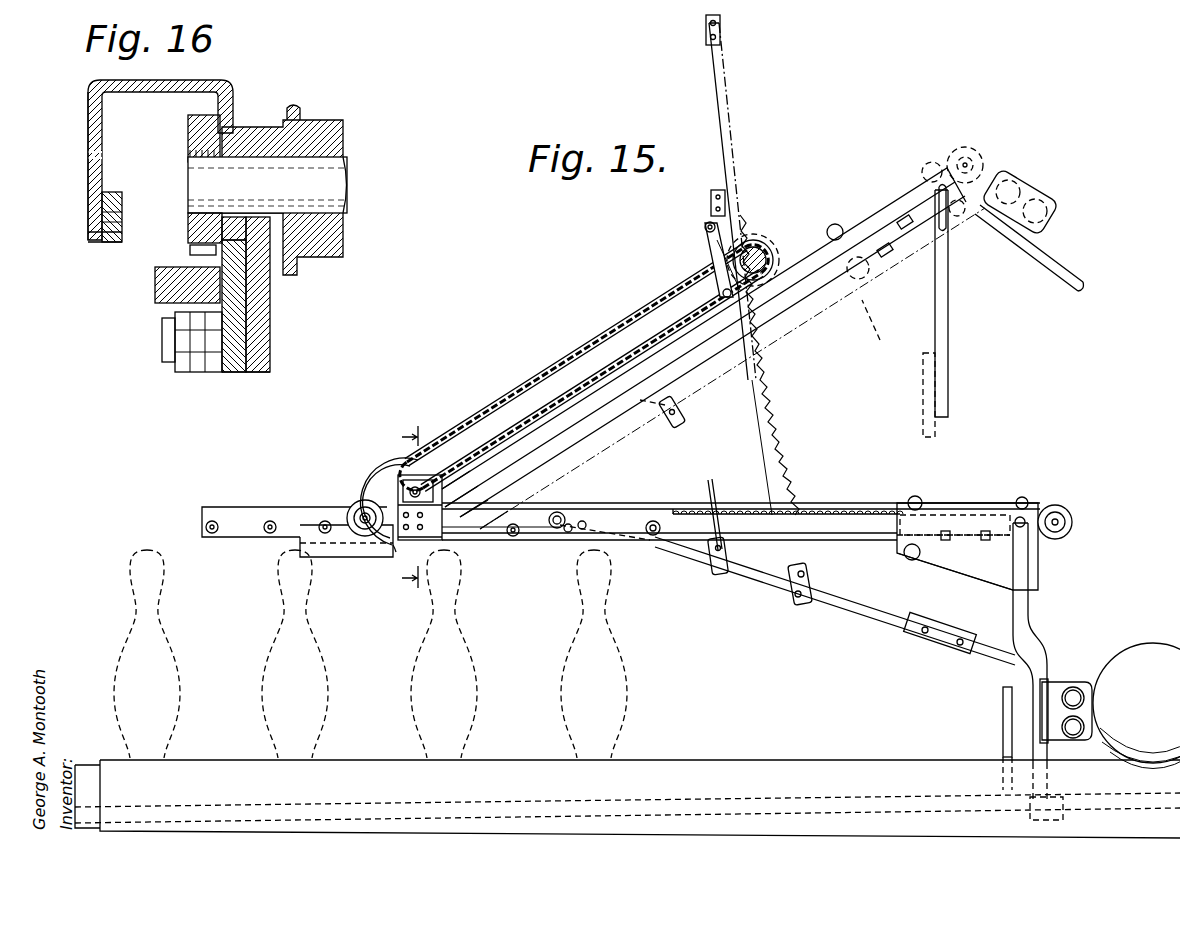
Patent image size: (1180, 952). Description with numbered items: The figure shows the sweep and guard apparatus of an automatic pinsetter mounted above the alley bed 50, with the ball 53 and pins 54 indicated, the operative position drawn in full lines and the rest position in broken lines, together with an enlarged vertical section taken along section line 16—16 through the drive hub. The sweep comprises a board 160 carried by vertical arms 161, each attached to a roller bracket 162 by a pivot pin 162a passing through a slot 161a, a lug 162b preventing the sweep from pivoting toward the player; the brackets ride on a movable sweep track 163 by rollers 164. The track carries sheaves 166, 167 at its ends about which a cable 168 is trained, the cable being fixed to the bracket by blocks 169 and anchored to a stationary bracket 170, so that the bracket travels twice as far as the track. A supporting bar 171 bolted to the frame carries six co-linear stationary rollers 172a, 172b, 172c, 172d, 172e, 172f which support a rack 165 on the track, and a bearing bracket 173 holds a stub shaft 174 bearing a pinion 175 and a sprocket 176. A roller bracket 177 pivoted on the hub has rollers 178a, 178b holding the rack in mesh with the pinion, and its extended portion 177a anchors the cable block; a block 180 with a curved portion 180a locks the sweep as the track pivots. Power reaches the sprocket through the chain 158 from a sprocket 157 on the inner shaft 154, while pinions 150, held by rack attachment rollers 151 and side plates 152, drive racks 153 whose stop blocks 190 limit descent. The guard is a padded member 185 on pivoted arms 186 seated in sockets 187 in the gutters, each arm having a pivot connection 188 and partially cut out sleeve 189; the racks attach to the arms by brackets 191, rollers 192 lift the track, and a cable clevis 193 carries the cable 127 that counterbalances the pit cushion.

In FIG. 15, the section line 16— 16 is at (406, 509).
In FIG. 15, the alley bed 50 is at (832, 760).
In FIG. 15, the ball 53 is at (1144, 645).
In FIG. 15, the pins 54 is at (230, 645).
In FIG. 15, the cable 127 is at (626, 366).
In FIG. 15, the pinion 150 is at (772, 242).
In FIG. 15, the rack attachment roller 151 is at (704, 226).
In FIG. 15, the side plate 152 is at (708, 245).
In FIG. 15, the rack 153 is at (722, 103).
In FIG. 15, the inner shaft 154 is at (752, 247).
In FIG. 15, the sprocket 157 is at (766, 234).
In FIG. 15, the chain 158 is at (538, 366).
In FIG. 15, the board 160 is at (1003, 705).
In FIG. 15, the vertical arm 161 is at (1030, 619).
In FIG. 15, the slot 161a is at (1010, 245).
In FIG. 15, the roller bracket 162 is at (862, 280).
In FIG. 15, the pivot pin 162a is at (925, 172).
In FIG. 15, the lug 162b is at (1036, 588).
In FIG. 15, the sweep track 163 is at (815, 318).
In FIG. 15, the roller 164 is at (930, 163).
In FIG. 16, the rack 165 is at (168, 281).
In FIG. 15, the rack 165 is at (706, 490).
In FIG. 15, the sheave 166 is at (360, 500).
In FIG. 15, the sheave 167 is at (1073, 518).
In FIG. 16, the cable 168 is at (122, 216).
In FIG. 15, the cable 168 is at (858, 510).
In FIG. 15, the block 169 is at (944, 531).
In FIG. 16, the stationary bracket 170 is at (108, 244).
In FIG. 16, the supporting bar 171 is at (256, 372).
In FIG. 15, the supporting bar 171 is at (280, 507).
In FIG. 15, the stationary roller 172a is at (206, 524).
In FIG. 15, the stationary roller 172b is at (265, 534).
In FIG. 15, the stationary roller 172c is at (325, 520).
In FIG. 15, the stationary roller 172d is at (520, 524).
In FIG. 15, the stationary roller 172e is at (575, 524).
In FIG. 15, the stationary roller 172f is at (651, 545).
In FIG. 16, the bearing bracket 173 is at (270, 316).
In FIG. 15, the bearing bracket 173 is at (449, 475).
In FIG. 16, the stub shaft 174 is at (349, 190).
In FIG. 15, the stub shaft 174 is at (445, 490).
In FIG. 16, the pinion 175 is at (190, 139).
In FIG. 15, the pinion 175 is at (500, 512).
In FIG. 16, the sprocket 176 is at (347, 135).
In FIG. 15, the sprocket 176 is at (458, 462).
In FIG. 16, the roller bracket 177 is at (228, 99).
In FIG. 15, the roller bracket 177 is at (400, 468).
In FIG. 16, the extended portion 177a is at (90, 118).
In FIG. 16, the roller 178a is at (180, 372).
In FIG. 15, the roller 178b is at (468, 541).
In FIG. 15, the block 180 is at (356, 557).
In FIG. 15, the curved portion 180a is at (405, 560).
In FIG. 15, the padded member 185 is at (1045, 200).
In FIG. 15, the pivoted arm 186 is at (787, 358).
In FIG. 15, the socket 187 is at (1063, 816).
In FIG. 15, the pivot connection 188 is at (952, 626).
In FIG. 15, the partially cut out sleeve 189 is at (915, 650).
In FIG. 15, the stop block 190 is at (706, 30).
In FIG. 15, the bracket 191 is at (702, 397).
In FIG. 15, the roller 192 is at (765, 513).
In FIG. 15, the cable clevis 193 is at (662, 412).